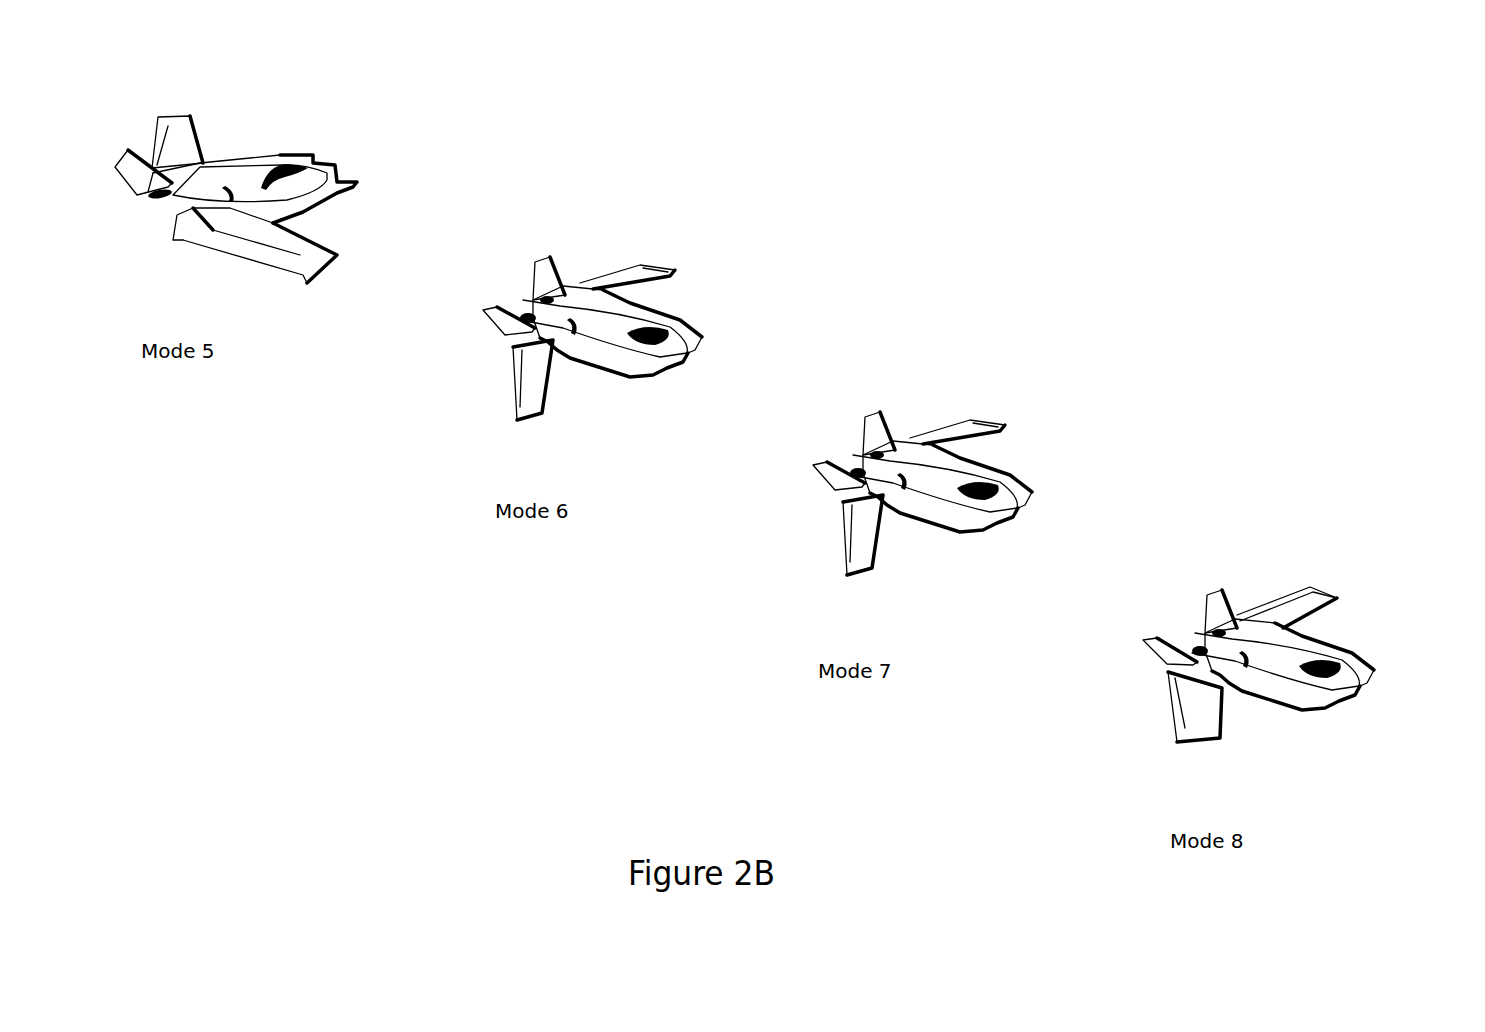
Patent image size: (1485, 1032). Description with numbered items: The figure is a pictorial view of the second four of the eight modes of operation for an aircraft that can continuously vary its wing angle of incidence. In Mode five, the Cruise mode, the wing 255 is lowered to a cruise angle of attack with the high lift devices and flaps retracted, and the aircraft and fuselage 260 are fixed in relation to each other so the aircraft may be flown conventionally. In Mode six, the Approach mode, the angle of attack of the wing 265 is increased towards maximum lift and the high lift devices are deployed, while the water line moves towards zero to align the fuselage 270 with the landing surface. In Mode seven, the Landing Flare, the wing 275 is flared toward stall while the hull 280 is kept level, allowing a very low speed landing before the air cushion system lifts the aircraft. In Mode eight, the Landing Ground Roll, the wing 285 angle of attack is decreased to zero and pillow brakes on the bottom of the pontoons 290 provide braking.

The wing 255 is at (212, 104).
The fuselage 260 is at (369, 183).
The wing 265 is at (698, 256).
The fuselage 270 is at (628, 398).
The wing 275 is at (1022, 409).
The hull 280 is at (922, 514).
The wing 285 is at (1362, 584).
The pontoons 290 is at (1286, 730).